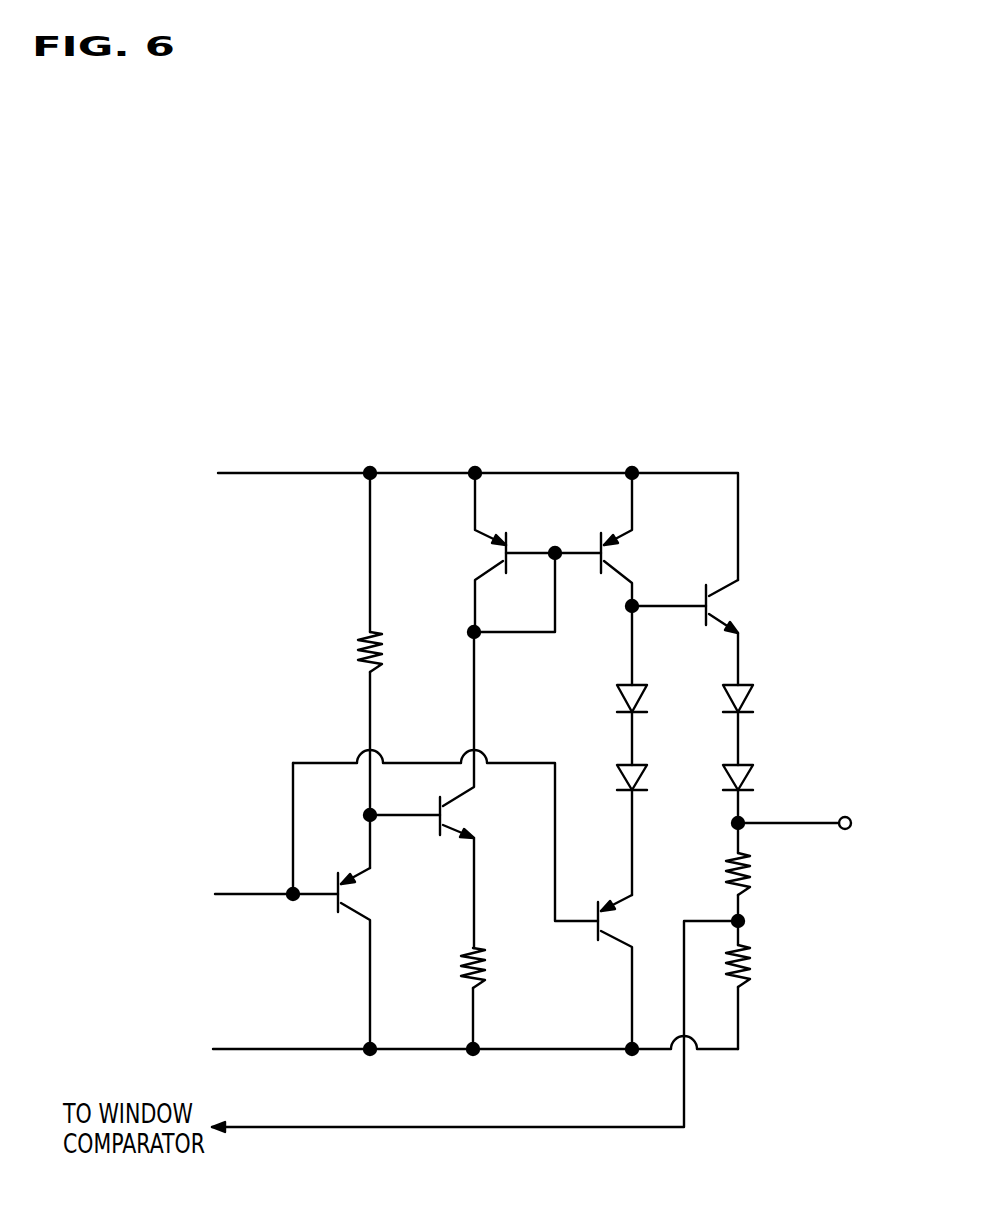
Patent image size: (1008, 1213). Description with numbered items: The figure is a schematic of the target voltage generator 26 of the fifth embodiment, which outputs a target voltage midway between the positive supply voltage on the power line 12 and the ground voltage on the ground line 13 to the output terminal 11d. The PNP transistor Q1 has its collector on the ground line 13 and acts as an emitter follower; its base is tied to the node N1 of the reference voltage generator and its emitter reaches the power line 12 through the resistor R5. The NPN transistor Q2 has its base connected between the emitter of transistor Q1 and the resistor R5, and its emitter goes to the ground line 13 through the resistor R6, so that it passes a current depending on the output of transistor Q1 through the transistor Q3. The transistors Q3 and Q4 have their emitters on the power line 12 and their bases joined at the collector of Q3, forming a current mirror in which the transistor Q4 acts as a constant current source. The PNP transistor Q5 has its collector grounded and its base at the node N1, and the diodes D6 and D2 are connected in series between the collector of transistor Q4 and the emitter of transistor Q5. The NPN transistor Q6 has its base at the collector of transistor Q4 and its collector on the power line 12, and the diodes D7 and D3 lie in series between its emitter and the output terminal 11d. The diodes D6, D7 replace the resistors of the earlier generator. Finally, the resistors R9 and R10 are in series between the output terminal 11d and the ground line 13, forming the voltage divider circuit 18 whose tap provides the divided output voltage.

The power line 12 is at (280, 472).
The ground line 13 is at (297, 1052).
The target voltage generator 26 is at (551, 487).
The output terminal 11d is at (847, 817).
The voltage divider circuit 18 is at (805, 951).
The node N1 is at (249, 892).
The transistor Q1 is at (365, 877).
The transistor Q2 is at (460, 798).
The transistor Q3 is at (484, 541).
The transistor Q4 is at (620, 535).
The transistor Q5 is at (620, 927).
The transistor Q6 is at (730, 592).
The resistor R5 is at (358, 652).
The resistor R6 is at (485, 968).
The resistor R9 is at (750, 874).
The resistor R10 is at (752, 965).
The diode D2 is at (645, 770).
The diode D3 is at (751, 770).
The diode D6 is at (645, 690).
The diode D7 is at (751, 690).